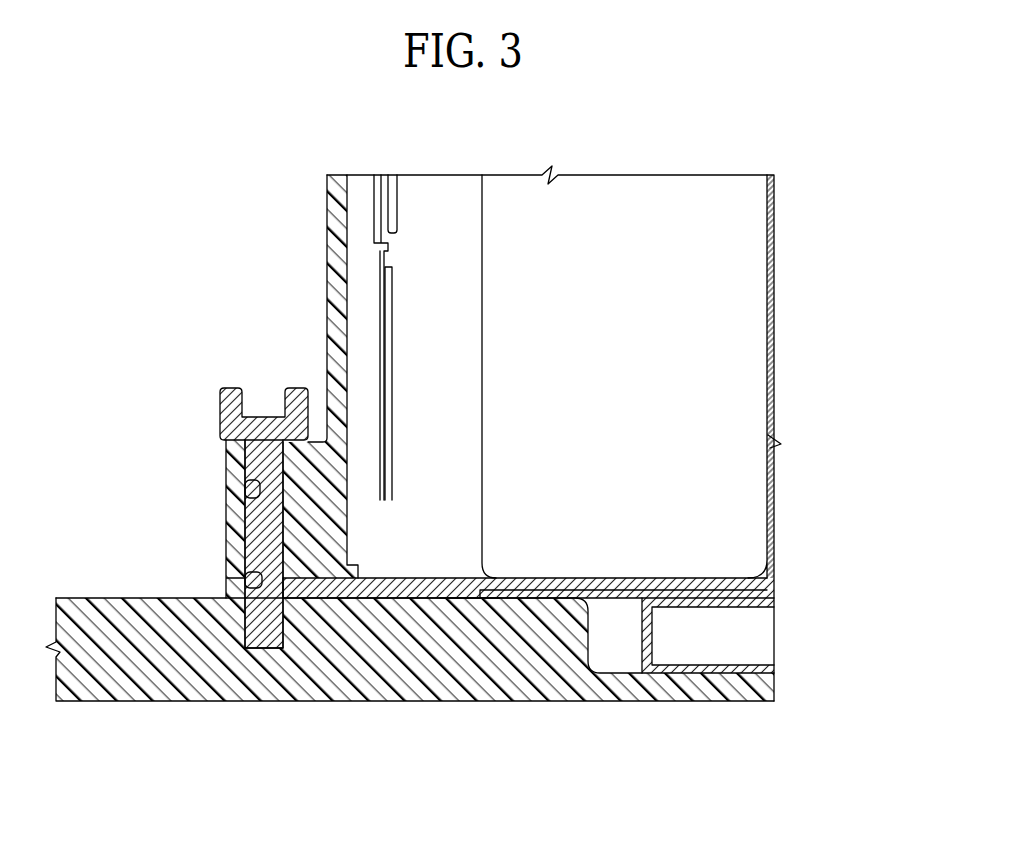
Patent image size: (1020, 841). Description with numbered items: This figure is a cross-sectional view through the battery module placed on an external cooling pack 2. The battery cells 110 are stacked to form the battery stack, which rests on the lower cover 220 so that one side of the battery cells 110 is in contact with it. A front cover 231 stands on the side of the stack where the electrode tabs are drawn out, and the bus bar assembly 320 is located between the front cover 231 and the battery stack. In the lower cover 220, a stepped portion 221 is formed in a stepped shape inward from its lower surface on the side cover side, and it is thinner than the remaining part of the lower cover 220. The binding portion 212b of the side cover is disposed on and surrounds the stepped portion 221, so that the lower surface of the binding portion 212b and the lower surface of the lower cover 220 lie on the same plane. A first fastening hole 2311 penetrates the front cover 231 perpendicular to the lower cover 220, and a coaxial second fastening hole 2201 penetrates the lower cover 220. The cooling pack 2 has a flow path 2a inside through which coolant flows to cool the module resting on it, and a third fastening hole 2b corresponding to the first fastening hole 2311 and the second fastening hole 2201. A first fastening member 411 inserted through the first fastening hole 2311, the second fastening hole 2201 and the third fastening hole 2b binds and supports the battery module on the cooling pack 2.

The battery cell 110 is at (758, 347).
The front cover 231 is at (336, 240).
The first fastening member 411 is at (233, 393).
The first fastening hole 2311 is at (256, 489).
The second fastening hole 2201 is at (256, 581).
The bus bar assembly 320 is at (402, 248).
The stepped portion 221 is at (748, 578).
The binding portion 212b is at (770, 594).
The cooling pack 2 is at (407, 683).
The flow path 2a is at (760, 637).
The third fastening hole 2b is at (285, 632).
The lower cover 220 is at (468, 601).